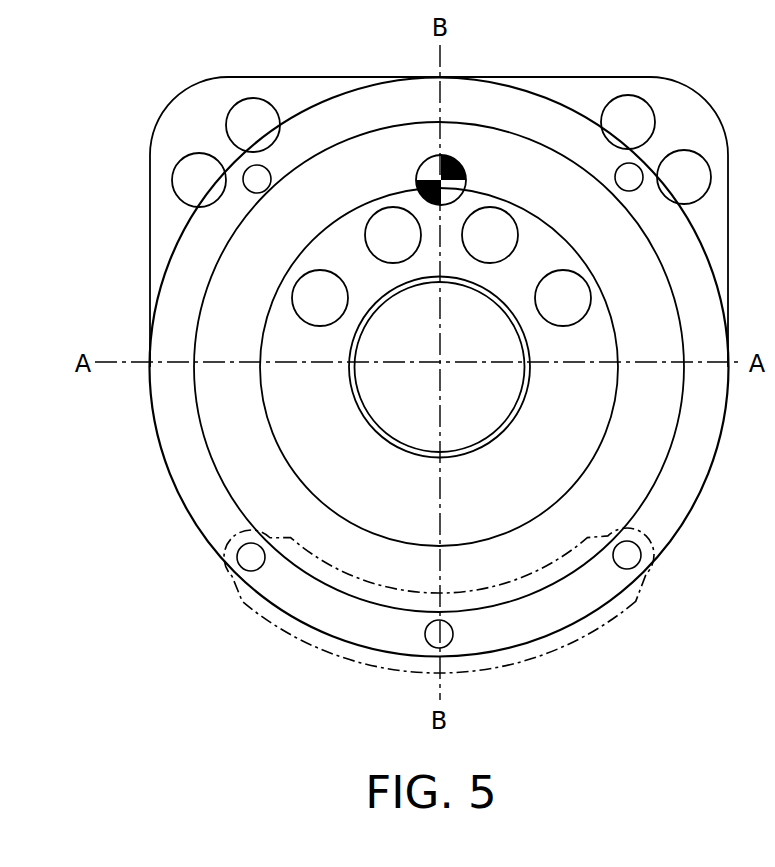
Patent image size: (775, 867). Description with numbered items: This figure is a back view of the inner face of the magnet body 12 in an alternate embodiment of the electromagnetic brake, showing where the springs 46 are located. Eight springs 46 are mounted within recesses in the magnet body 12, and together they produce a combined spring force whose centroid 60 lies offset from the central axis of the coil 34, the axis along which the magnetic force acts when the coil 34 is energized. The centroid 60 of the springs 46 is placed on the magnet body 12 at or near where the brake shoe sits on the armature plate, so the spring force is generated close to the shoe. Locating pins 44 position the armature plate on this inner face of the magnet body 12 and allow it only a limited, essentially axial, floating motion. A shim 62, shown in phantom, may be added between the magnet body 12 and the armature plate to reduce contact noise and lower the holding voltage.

The magnet body 12 is at (297, 98).
The coil 34 is at (233, 457).
The locating pins 44 is at (619, 167).
The springs 46 is at (226, 122).
The centroid 60 is at (463, 167).
The shim 62 is at (538, 657).